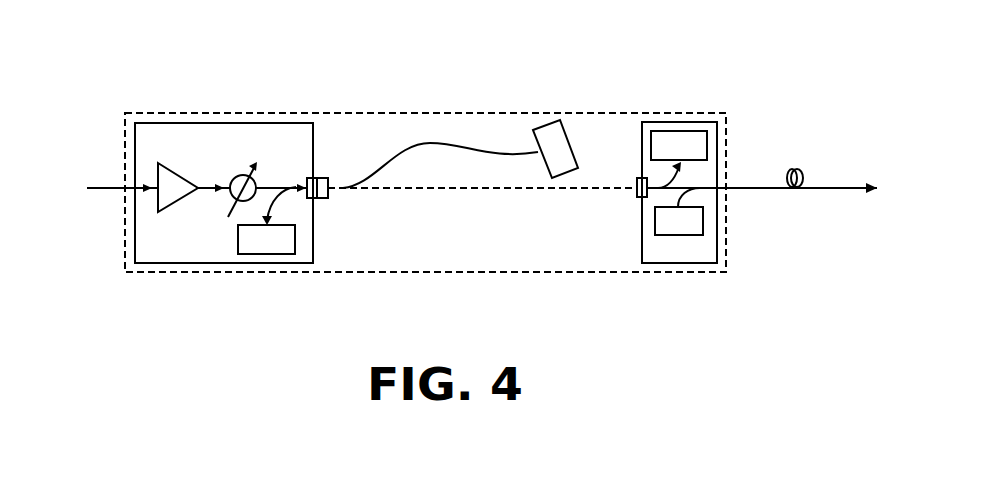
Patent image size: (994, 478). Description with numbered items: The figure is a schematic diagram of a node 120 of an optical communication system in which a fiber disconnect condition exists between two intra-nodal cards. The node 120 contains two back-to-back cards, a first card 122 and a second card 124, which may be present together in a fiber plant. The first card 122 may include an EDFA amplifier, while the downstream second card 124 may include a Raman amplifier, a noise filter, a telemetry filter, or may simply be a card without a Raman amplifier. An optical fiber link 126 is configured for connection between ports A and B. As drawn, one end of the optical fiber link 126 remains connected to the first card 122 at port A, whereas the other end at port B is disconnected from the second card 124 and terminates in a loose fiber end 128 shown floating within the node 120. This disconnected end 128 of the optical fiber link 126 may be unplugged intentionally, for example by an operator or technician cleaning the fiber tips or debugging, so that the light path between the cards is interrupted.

The node 120 is at (431, 108).
The first card 122 is at (230, 122).
The second card 124 is at (680, 263).
The optical fiber link 126 is at (395, 165).
The optical component block 128 is at (546, 125).